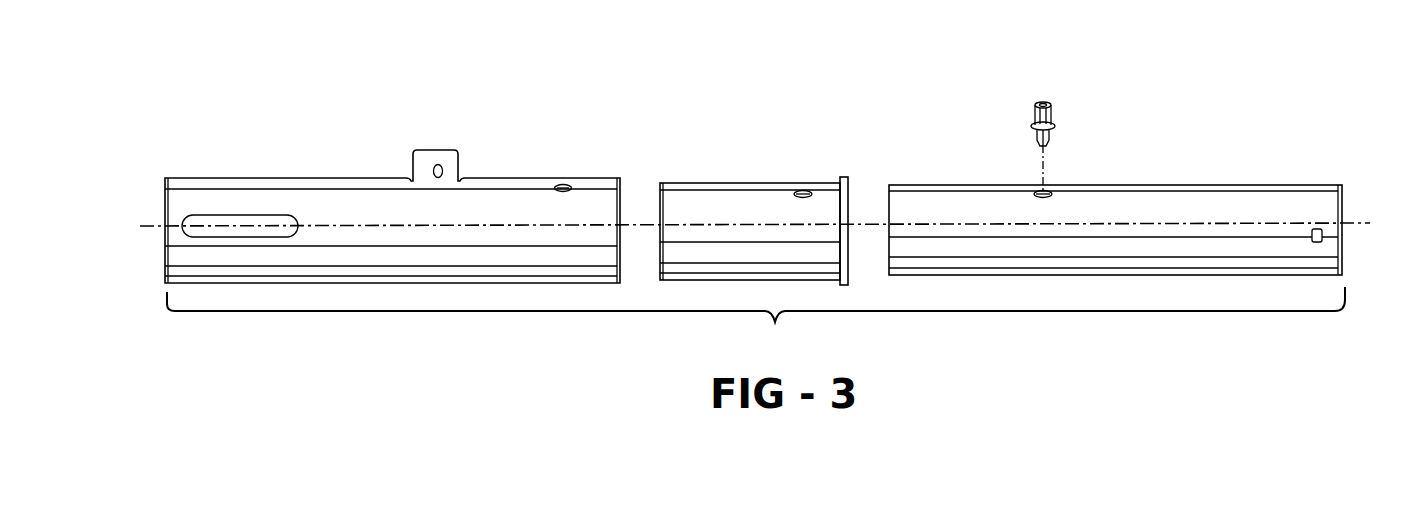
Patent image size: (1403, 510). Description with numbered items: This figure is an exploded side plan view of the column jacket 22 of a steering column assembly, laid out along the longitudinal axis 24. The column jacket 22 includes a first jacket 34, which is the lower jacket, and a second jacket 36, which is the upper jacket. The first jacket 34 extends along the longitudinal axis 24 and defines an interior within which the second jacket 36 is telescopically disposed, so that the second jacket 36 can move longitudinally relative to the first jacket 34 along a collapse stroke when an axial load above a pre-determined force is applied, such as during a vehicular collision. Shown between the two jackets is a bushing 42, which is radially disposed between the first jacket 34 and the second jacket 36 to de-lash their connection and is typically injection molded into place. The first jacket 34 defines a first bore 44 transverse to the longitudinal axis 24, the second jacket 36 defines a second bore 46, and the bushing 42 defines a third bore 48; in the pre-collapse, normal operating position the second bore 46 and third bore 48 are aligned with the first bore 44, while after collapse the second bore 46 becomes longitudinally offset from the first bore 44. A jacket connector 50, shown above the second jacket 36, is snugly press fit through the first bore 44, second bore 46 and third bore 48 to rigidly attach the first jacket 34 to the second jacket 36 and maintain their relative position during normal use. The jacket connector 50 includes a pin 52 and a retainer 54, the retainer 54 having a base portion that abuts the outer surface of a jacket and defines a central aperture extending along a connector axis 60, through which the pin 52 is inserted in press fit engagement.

The column jacket 22 is at (1034, 72).
The longitudinal axis 24 is at (636, 226).
The first jacket 34 is at (313, 178).
The second jacket 36 is at (1277, 185).
The bushing 42 is at (782, 183).
The first bore 44 is at (563, 184).
The second bore 46 is at (1047, 190).
The third bore 48 is at (803, 190).
The jacket connector 50 is at (1050, 115).
The pin 52 is at (1034, 110).
The retainer 54 is at (1036, 130).
The connector axis 60 is at (1046, 158).